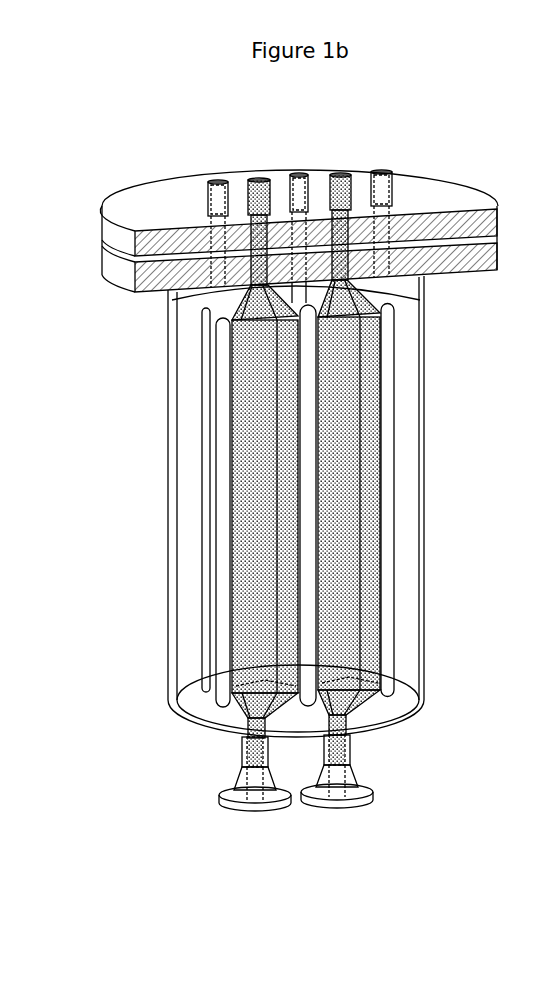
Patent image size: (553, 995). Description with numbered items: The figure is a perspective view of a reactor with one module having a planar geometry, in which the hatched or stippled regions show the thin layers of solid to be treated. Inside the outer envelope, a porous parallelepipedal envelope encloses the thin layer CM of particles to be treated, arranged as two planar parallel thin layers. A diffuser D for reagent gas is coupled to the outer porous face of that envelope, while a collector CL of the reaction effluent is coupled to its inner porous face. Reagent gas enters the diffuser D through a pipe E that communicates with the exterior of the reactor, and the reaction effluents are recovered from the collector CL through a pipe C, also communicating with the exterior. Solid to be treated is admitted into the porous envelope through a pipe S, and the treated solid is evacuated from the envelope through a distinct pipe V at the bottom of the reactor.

The pipe for admitting reagent gas E is at (218, 156).
The pipe for admitting solid S is at (258, 152).
The pipe for recovering reaction effluents C is at (300, 172).
The diffuser D is at (225, 402).
The collector CL is at (312, 525).
The thin layer of particles CM is at (258, 577).
The pipe for evacuating treated solid V is at (255, 815).